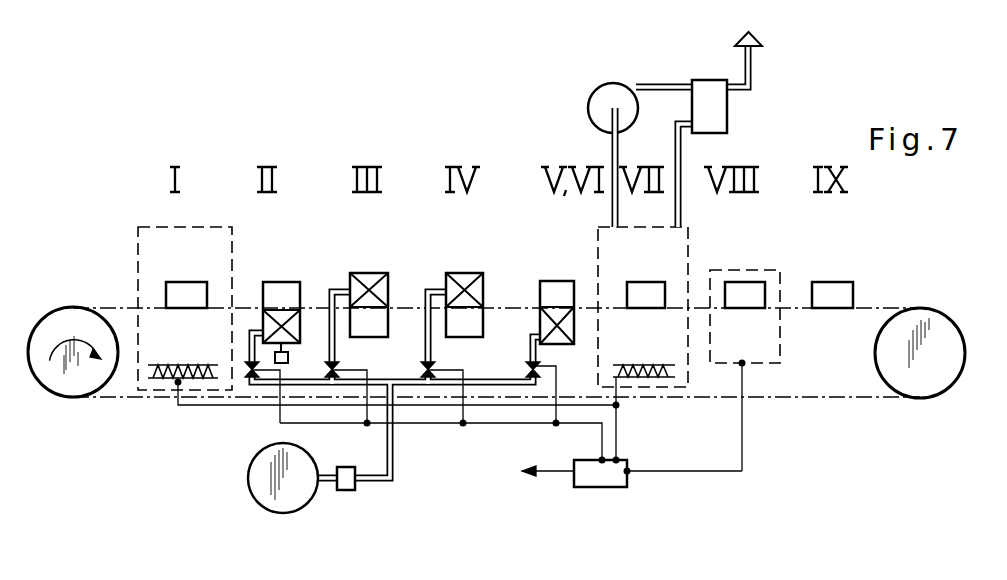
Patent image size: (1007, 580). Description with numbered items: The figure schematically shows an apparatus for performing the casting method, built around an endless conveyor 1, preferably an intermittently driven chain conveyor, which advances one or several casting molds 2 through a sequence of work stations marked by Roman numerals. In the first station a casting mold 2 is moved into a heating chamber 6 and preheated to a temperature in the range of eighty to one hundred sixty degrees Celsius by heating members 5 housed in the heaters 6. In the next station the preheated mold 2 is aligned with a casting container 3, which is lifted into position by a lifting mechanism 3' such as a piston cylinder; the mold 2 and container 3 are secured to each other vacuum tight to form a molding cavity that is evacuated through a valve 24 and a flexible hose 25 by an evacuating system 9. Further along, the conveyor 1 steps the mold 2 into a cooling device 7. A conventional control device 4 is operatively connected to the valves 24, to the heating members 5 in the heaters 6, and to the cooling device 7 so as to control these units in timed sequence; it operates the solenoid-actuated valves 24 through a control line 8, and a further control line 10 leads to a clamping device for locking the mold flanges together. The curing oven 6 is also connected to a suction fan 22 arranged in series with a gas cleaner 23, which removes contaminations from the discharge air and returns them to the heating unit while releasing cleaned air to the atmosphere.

The endless conveyor 1 is at (880, 308).
The casting mold 2 is at (181, 292).
The casting container 3 is at (423, 305).
The lifting mechanism 3' is at (301, 361).
The control device 4 is at (613, 478).
The heating member 5 is at (160, 372).
The heating chamber 6 is at (135, 236).
The cooling device 7 is at (765, 262).
The control line 8 is at (490, 423).
The evacuating system 9 is at (305, 495).
The control line 10 is at (557, 478).
The suction fan 22 is at (601, 96).
The gas cleaner 23 is at (709, 85).
The valve 24 is at (253, 377).
The flexible hose 25 is at (255, 333).